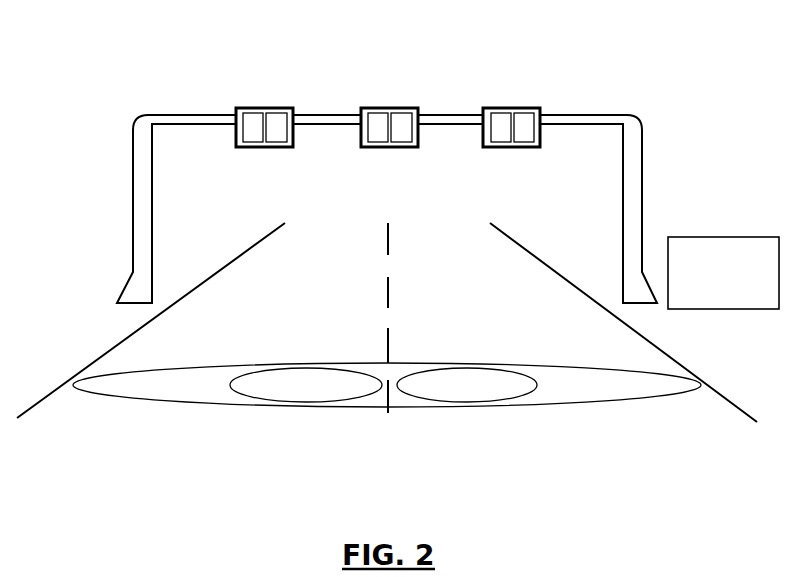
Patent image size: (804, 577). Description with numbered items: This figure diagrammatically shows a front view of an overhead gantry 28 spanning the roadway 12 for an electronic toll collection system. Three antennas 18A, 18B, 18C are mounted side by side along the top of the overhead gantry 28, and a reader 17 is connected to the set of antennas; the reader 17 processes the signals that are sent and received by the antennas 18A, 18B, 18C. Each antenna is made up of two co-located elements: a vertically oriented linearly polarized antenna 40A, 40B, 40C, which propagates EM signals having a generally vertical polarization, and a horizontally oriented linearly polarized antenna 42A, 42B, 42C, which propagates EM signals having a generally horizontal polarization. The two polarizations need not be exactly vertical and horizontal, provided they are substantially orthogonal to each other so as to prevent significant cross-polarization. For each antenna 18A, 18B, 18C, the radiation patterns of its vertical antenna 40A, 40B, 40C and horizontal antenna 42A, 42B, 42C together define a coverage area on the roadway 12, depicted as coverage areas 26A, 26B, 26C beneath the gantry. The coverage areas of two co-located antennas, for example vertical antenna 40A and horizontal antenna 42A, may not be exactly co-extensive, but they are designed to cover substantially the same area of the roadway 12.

The overhead gantry 28 is at (160, 73).
The roadway 12 is at (437, 260).
The reader 17 is at (707, 237).
The antenna 18A is at (288, 129).
The antenna 18B is at (411, 131).
The antenna 18C is at (534, 129).
The vertically oriented linearly polarized antenna 40A is at (251, 113).
The vertically oriented linearly polarized antenna 40B is at (379, 113).
The vertically oriented linearly polarized antenna 40C is at (502, 113).
The horizontally oriented linearly polarized antenna 42A is at (278, 113).
The horizontally oriented linearly polarized antenna 42B is at (404, 113).
The horizontally oriented linearly polarized antenna 42C is at (530, 113).
The coverage area 26A is at (191, 365).
The coverage area 26B is at (372, 404).
The coverage area 26C is at (588, 403).